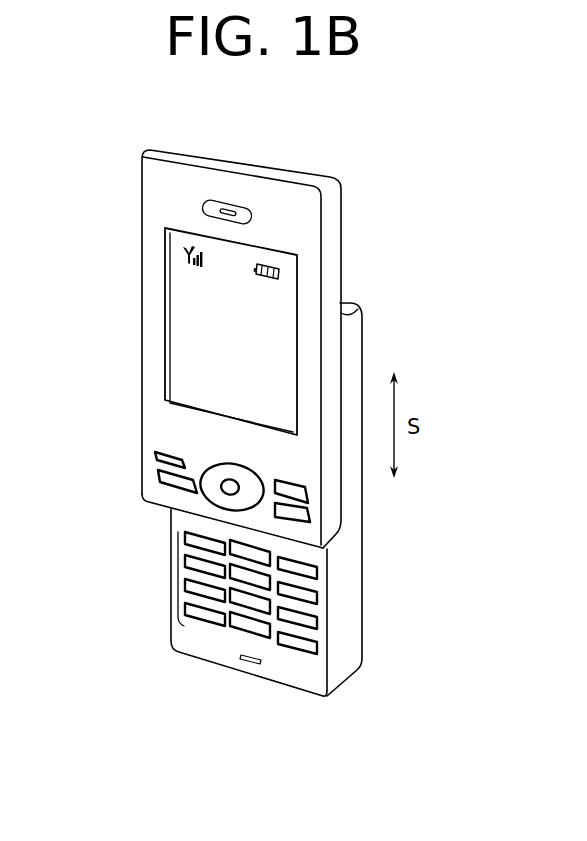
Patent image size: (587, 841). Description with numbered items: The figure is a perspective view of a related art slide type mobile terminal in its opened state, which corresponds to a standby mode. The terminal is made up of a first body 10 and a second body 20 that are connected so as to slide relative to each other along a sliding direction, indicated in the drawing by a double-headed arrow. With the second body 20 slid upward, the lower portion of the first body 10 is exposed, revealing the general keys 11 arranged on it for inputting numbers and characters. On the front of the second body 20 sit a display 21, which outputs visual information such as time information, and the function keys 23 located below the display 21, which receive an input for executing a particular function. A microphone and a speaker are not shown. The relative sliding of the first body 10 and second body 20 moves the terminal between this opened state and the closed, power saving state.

The first body 10 is at (350, 558).
The general keys 11 is at (173, 576).
The second body 20 is at (330, 203).
The display 21 is at (176, 261).
The function keys 23 is at (142, 471).